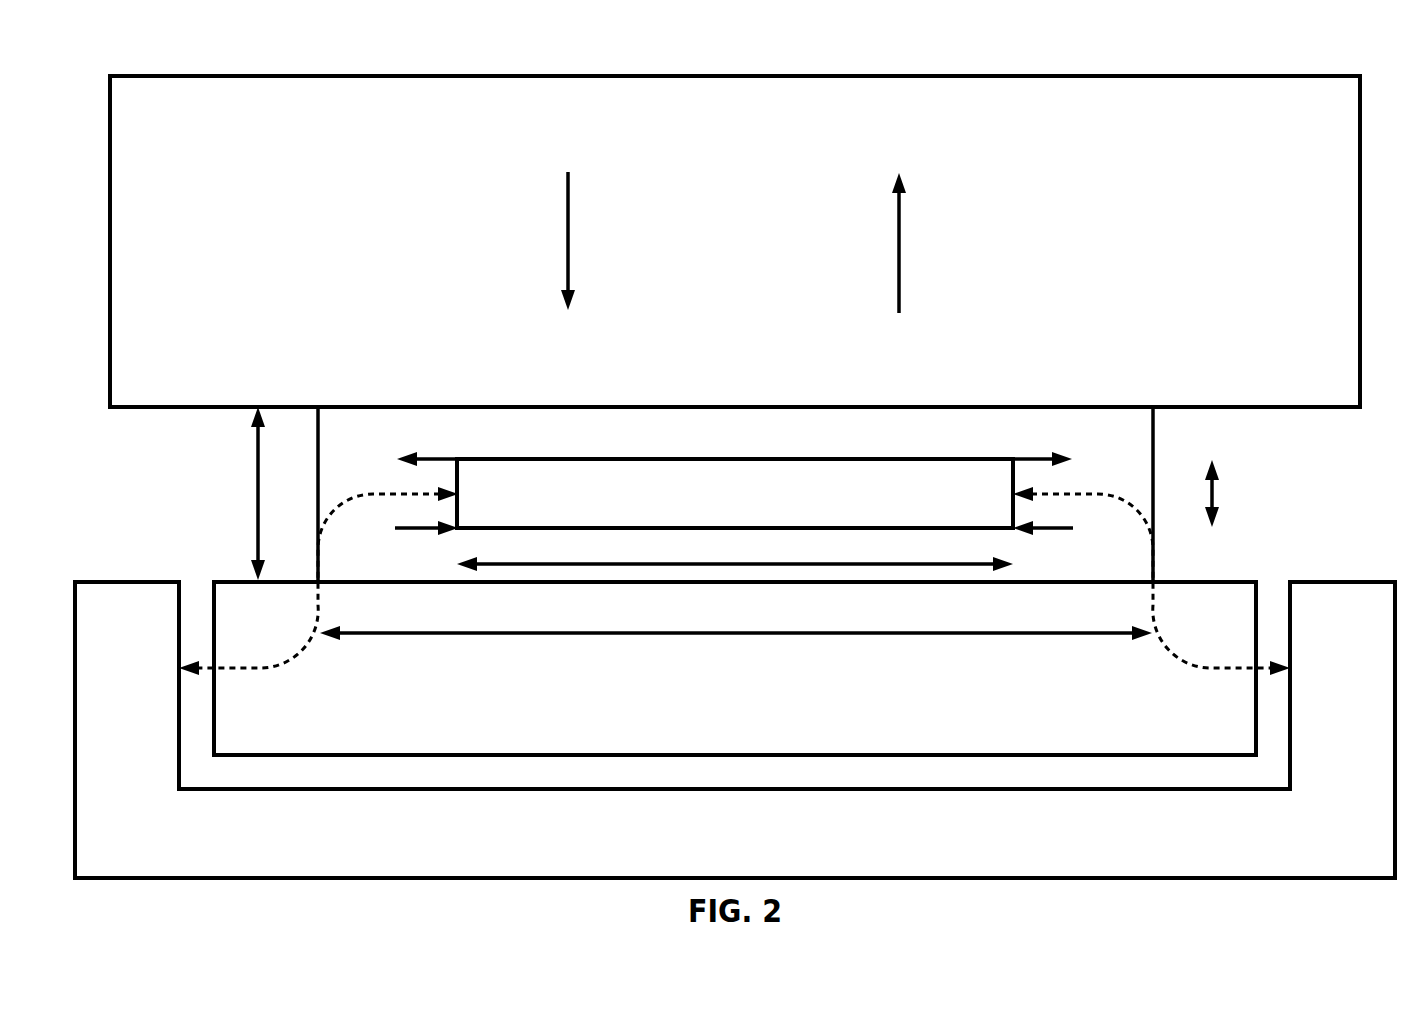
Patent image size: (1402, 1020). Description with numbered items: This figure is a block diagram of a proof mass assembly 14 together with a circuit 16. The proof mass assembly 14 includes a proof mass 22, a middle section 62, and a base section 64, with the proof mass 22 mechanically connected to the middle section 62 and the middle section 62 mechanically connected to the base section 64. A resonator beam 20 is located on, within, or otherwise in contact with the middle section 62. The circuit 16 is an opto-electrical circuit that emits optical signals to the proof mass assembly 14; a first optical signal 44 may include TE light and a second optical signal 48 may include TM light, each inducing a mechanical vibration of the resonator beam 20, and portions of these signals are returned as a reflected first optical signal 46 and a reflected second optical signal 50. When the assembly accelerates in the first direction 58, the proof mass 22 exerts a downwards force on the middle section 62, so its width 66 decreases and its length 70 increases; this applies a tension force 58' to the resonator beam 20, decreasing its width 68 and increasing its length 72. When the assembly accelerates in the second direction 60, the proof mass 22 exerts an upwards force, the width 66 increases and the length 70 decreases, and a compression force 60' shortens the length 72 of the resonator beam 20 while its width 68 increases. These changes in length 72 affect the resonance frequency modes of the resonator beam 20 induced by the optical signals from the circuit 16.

The proof mass assembly 14 is at (1312, 42).
The circuit 16 is at (106, 580).
The resonator beam 20 is at (720, 518).
The proof mass 22 is at (722, 265).
The first optical signal 44 is at (318, 568).
The reflected first optical signal 46 is at (412, 492).
The second optical signal 48 is at (1151, 568).
The reflected second optical signal 50 is at (1058, 492).
The first direction 58 is at (539, 240).
The tension force 58' is at (738, 446).
The second direction 60 is at (928, 242).
The compression force 60' is at (737, 518).
The middle section 62 is at (1153, 478).
The base section 64 is at (720, 692).
The width of middle section 66 is at (258, 493).
The width of resonator beam 68 is at (1212, 495).
The length of middle section 70 is at (460, 631).
The length of resonator beam 72 is at (572, 562).